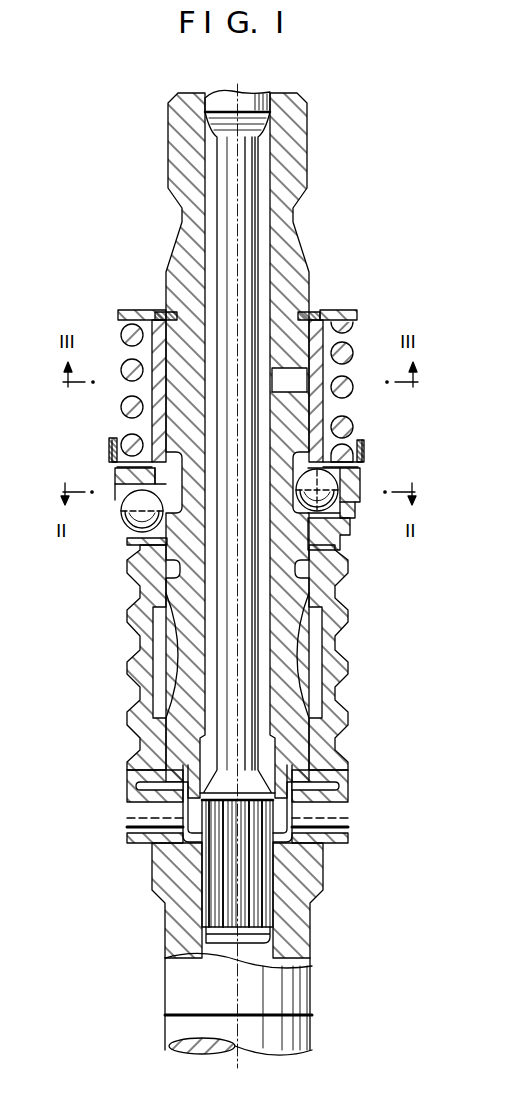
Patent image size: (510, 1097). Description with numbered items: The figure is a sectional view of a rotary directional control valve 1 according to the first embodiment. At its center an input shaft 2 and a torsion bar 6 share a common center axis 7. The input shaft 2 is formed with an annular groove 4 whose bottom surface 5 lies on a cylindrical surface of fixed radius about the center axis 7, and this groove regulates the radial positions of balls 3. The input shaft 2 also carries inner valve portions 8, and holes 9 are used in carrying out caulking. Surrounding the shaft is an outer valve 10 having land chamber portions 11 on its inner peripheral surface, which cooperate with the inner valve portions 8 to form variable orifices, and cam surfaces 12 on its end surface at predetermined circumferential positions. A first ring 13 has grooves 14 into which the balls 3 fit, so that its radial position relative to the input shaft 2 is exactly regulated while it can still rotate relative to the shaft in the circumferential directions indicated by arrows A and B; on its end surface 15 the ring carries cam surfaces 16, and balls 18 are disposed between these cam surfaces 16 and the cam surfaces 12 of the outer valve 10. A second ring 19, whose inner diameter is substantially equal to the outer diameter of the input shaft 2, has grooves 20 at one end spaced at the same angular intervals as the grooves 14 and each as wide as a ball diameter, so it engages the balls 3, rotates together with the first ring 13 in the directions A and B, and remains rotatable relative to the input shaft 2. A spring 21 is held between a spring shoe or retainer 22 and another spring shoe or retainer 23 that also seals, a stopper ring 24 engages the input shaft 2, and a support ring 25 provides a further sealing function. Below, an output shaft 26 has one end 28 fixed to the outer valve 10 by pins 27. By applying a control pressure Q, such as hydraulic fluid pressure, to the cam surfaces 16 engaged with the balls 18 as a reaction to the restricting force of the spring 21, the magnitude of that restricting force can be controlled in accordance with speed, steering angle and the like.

The rotary directional control valve 1 is at (333, 250).
The input shaft 2 is at (292, 281).
The balls 3 is at (343, 487).
The annular groove 4 is at (360, 445).
The bottom surface 5 is at (118, 477).
The torsion bar 6 is at (245, 186).
The center axis 7 is at (240, 233).
The inner valve portions 8 is at (172, 657).
The holes 9 is at (284, 388).
The outer valve 10 is at (342, 786).
The land chamber portions 11 is at (157, 692).
The cam surfaces 12 is at (124, 550).
The first ring 13 is at (343, 510).
The grooves 14 is at (340, 540).
The end surface 15 is at (124, 540).
The cam surfaces 16 is at (122, 490).
The balls 18 is at (126, 500).
The second ring 19 is at (330, 342).
The grooves 20 is at (357, 504).
The spring 21 is at (347, 428).
The spring shoe 22 is at (350, 316).
The spring shoe 23 is at (124, 460).
The stopper ring 24 is at (305, 312).
The support ring 25 is at (113, 460).
The output shaft 26 is at (298, 982).
The pins 27 is at (130, 808).
The one end of the output shaft 28 is at (292, 921).
The arrow A is at (325, 110).
The arrow B is at (327, 130).
The control pressure Q is at (113, 516).